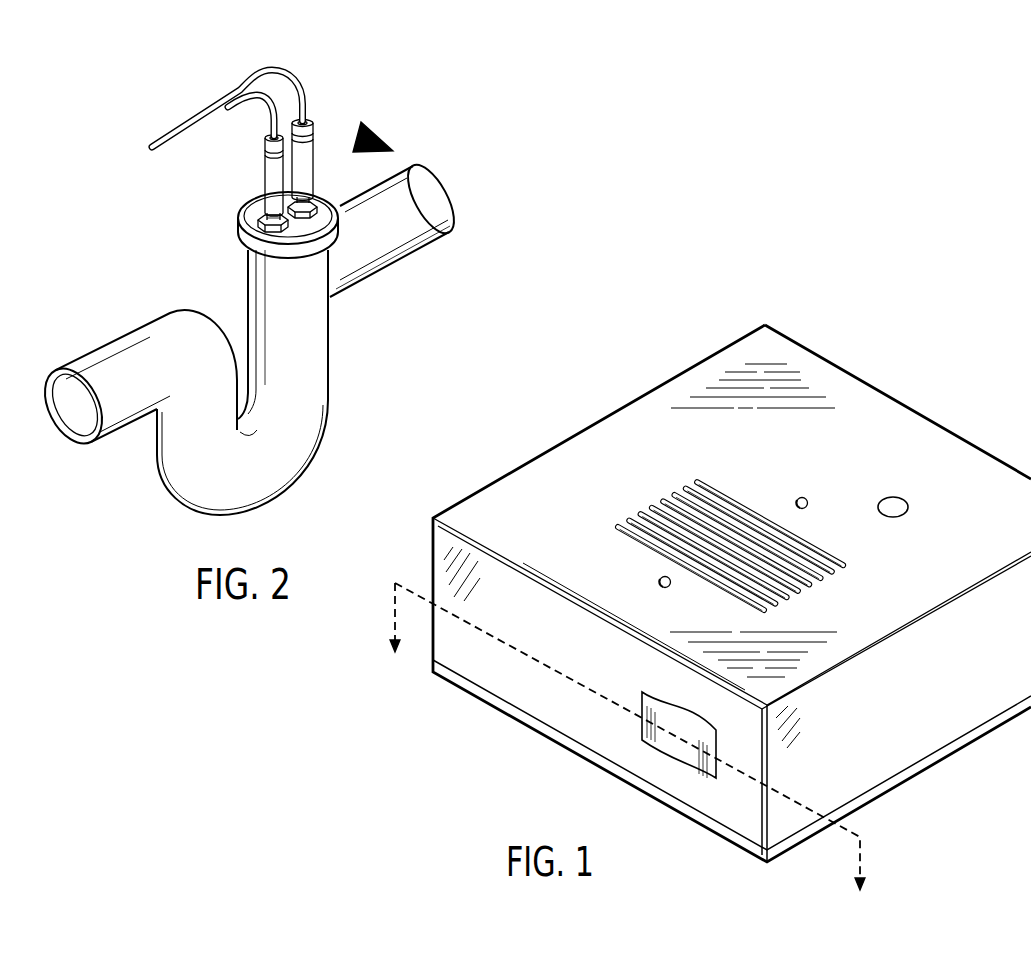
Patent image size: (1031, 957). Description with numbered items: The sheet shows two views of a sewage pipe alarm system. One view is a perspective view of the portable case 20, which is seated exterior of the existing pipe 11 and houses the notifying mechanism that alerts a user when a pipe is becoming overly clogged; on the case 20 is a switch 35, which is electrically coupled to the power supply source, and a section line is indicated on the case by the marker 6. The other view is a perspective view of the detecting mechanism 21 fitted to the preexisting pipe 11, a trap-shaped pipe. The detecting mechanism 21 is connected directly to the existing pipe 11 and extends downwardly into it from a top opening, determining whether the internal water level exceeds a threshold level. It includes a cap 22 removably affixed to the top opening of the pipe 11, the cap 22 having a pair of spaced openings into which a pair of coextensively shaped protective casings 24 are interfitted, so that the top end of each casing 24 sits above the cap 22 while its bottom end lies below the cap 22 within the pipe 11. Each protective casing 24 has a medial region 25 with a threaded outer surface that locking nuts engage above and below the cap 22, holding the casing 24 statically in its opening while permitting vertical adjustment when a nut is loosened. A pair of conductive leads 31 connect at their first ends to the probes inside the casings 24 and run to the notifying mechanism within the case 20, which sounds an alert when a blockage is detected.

In FIG. 2, the existing pipe 11 is at (310, 418).
In FIG. 1, the portable case 20 is at (732, 537).
In FIG. 2, the detecting mechanism 21 is at (393, 133).
In FIG. 2, the cap 22 is at (238, 244).
In FIG. 2, the protective casing 24 is at (301, 154).
In FIG. 2, the medial region 25 is at (258, 217).
In FIG. 2, the conductive leads 31 is at (293, 70).
In FIG. 1, the switch 35 is at (710, 753).
In FIG. 1, the section line 6 is at (626, 750).